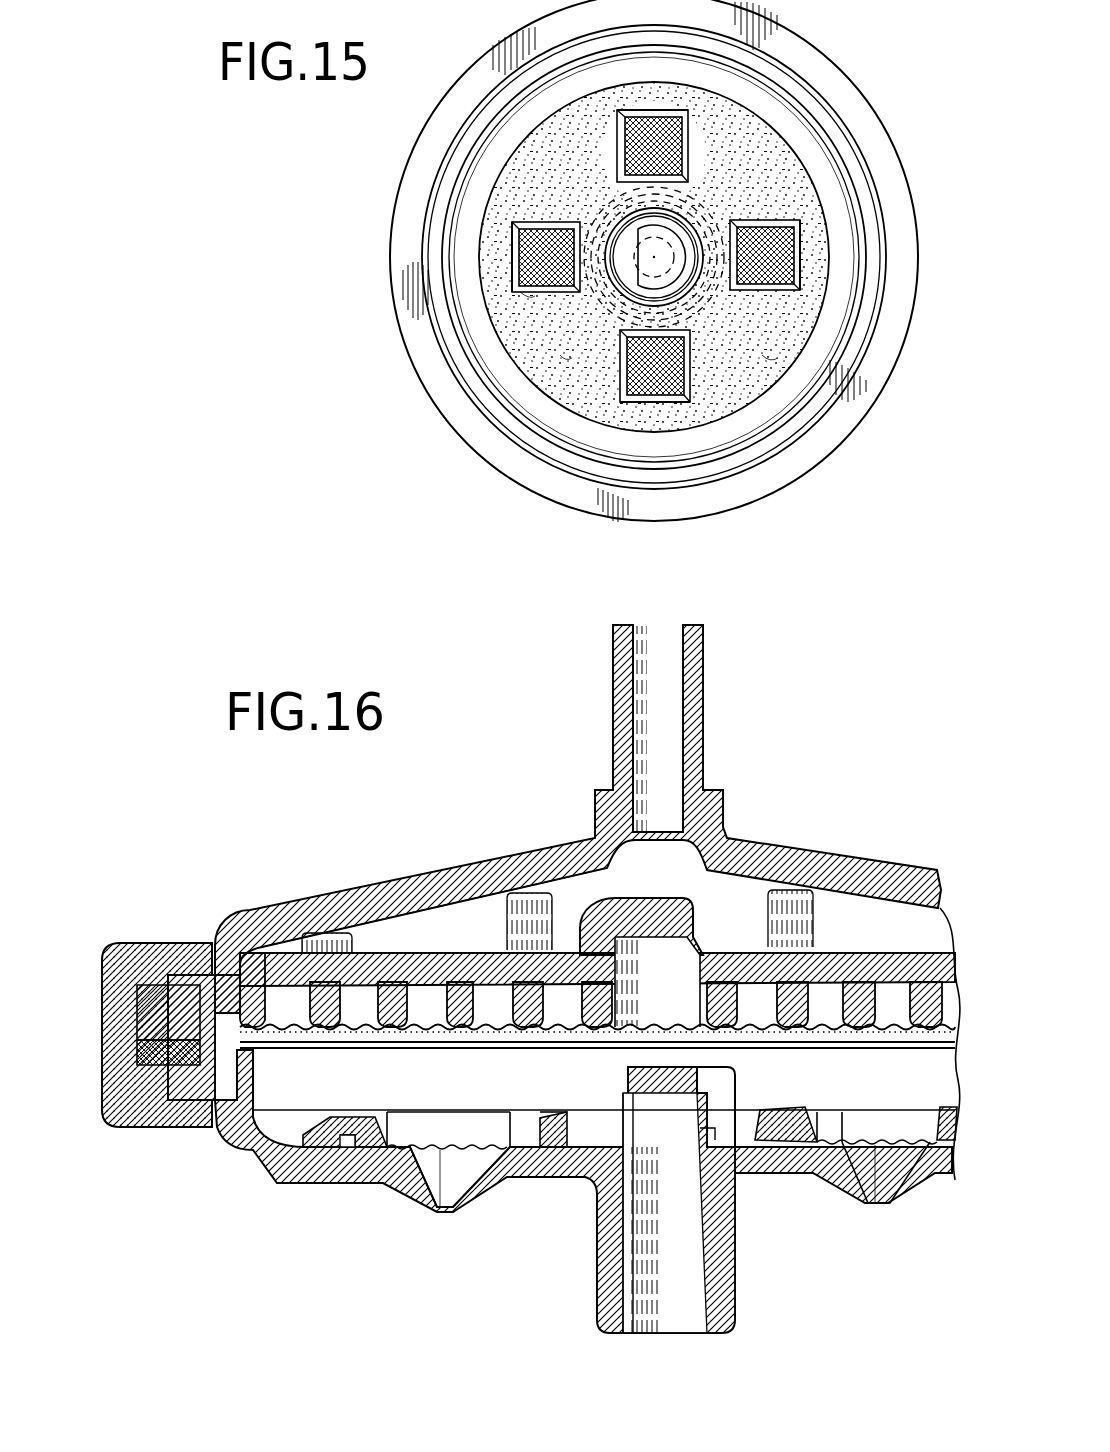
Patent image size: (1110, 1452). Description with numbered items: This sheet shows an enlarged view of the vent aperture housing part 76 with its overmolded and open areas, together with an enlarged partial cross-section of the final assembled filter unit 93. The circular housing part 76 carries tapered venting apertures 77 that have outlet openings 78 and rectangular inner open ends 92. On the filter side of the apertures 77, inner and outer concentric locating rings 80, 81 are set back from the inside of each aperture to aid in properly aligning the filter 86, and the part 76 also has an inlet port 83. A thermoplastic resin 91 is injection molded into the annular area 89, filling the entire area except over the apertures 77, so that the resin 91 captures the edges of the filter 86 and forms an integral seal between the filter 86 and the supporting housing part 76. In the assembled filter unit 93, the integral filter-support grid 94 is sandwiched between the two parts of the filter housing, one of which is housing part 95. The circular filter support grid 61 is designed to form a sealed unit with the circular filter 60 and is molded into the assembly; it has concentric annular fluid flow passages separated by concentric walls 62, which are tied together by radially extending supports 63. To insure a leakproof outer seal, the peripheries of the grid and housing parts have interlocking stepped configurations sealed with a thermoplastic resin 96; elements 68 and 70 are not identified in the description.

In FIG. 16, the circular filter 60 is at (790, 1027).
In FIG. 16, the circular filter support grid 61 is at (425, 963).
In FIG. 16, the concentric walls 62 is at (392, 1006).
In FIG. 16, the radially extending supports 63 is at (838, 950).
In FIG. 16, the sealing ring 68 is at (140, 1040).
In FIG. 16, the retaining ring 70 is at (125, 1058).
In FIG. 15, the circular filter housing part 76 is at (798, 445).
In FIG. 15, the tapered venting apertures 77 is at (663, 140).
In FIG. 16, the tapered venting apertures 77 is at (455, 1133).
In FIG. 16, the outlet openings 78 is at (443, 1212).
In FIG. 15, the inner concentric locating ring 80 is at (707, 300).
In FIG. 16, the inner concentric locating ring 80 is at (560, 1155).
In FIG. 15, the outer concentric locating ring 81 is at (770, 363).
In FIG. 16, the outer concentric locating ring 81 is at (350, 1140).
In FIG. 16, the inlet port 83 is at (670, 1287).
In FIG. 15, the filter 86 is at (548, 228).
In FIG. 16, the filter 86 is at (410, 1147).
In FIG. 15, the annular area 89 is at (568, 162).
In FIG. 15, the thermoplastic resin 91 is at (566, 362).
In FIG. 16, the thermoplastic resin 91 is at (337, 1120).
In FIG. 15, the inner open ends 92 is at (535, 296).
In FIG. 16, the filter unit 93 is at (268, 893).
In FIG. 16, the integral filter-support grid 94 is at (615, 1003).
In FIG. 16, the housing part 95 is at (428, 880).
In FIG. 16, the thermoplastic resin 96 is at (115, 945).